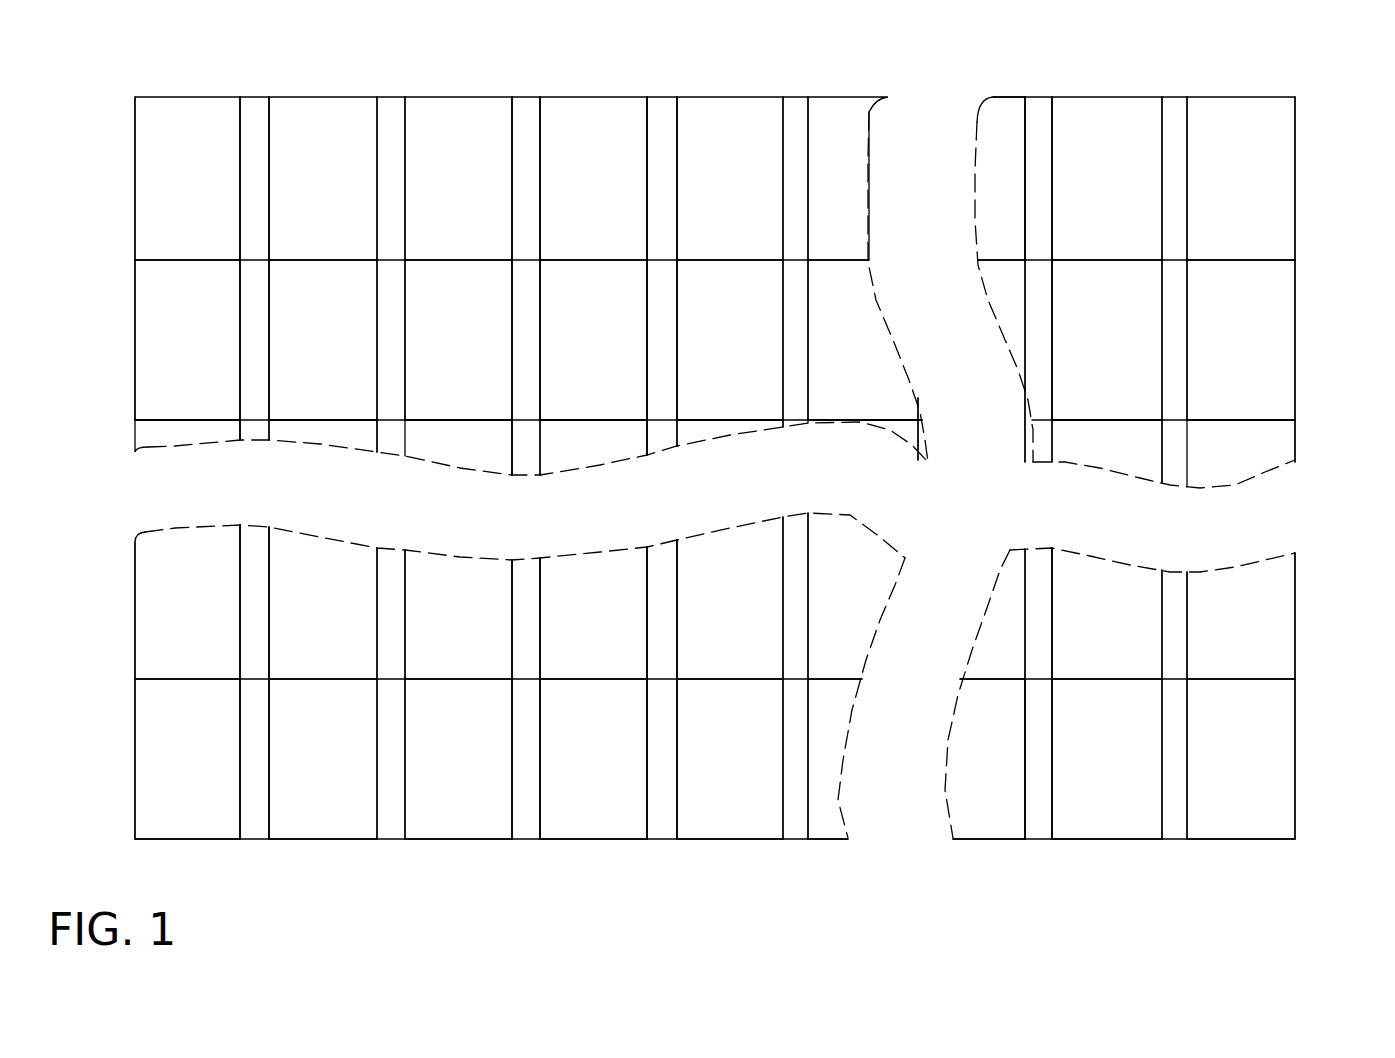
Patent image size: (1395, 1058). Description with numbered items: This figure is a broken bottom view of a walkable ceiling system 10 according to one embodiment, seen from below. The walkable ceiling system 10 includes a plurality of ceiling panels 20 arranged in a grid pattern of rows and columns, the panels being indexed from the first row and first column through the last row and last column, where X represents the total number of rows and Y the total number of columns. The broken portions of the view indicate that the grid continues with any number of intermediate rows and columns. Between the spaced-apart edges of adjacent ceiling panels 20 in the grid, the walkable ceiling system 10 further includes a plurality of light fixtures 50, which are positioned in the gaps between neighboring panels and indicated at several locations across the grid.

The walkable ceiling system 10 is at (72, 164).
The ceiling panels 20 is at (724, 472).
The light fixtures 50 is at (390, 193).